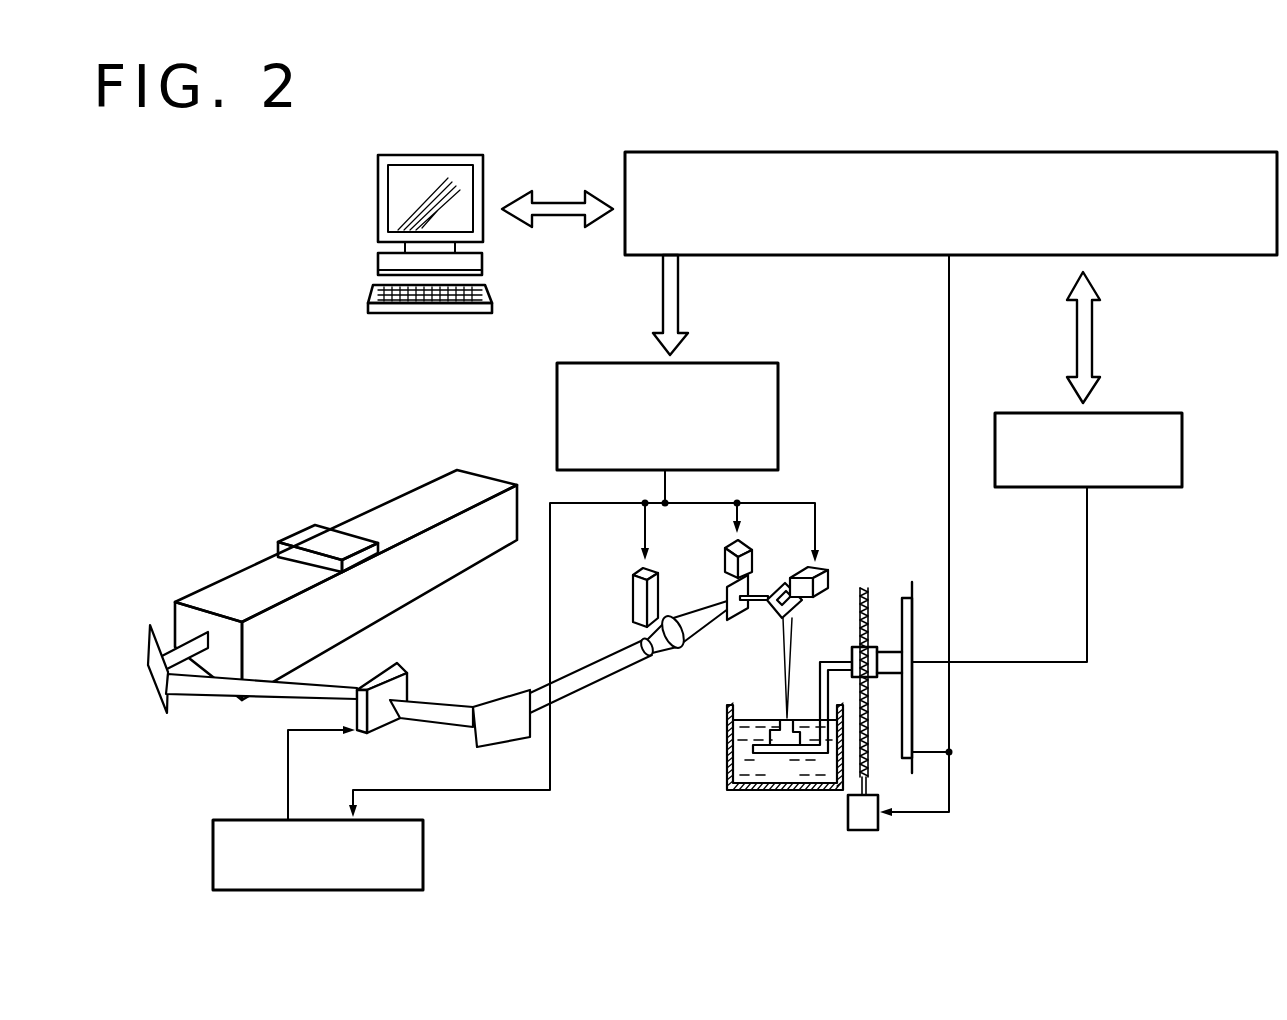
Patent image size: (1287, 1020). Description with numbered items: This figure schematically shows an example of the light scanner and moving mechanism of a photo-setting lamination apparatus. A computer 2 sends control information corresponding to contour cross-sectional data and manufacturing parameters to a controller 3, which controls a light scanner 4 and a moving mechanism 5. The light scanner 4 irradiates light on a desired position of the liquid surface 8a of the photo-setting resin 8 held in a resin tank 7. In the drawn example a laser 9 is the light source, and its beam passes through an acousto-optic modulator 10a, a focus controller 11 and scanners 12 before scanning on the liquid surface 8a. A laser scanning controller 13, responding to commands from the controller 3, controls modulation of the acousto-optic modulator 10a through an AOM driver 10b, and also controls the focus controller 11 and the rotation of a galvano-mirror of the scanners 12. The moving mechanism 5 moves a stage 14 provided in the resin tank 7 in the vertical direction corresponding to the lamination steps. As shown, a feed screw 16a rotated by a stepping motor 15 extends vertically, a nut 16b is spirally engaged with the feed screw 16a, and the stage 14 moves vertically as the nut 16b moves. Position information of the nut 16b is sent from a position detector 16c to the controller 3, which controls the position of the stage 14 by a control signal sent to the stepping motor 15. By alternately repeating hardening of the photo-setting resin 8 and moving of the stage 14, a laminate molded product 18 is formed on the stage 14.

The computer 2 is at (378, 215).
The controller 3 is at (1143, 152).
The light scanner 4 is at (432, 405).
The moving mechanism 5 is at (865, 657).
The resin tank 7 is at (728, 710).
The photo-setting resin 8 is at (728, 737).
The liquid surface 8a is at (753, 718).
The laser 9 is at (220, 587).
The acousto-optic modulator 10a is at (382, 728).
The AOM driver 10b is at (425, 863).
The focus controller 11 is at (635, 587).
The scanners 12 is at (800, 578).
The laser scanning controller 13 is at (745, 363).
The stage 14 is at (797, 758).
The stepping motor 15 is at (865, 832).
The feed screw 16a is at (863, 592).
The nut 16b is at (850, 653).
The position detector 16c is at (1160, 410).
The laminate molded product 18 is at (783, 737).